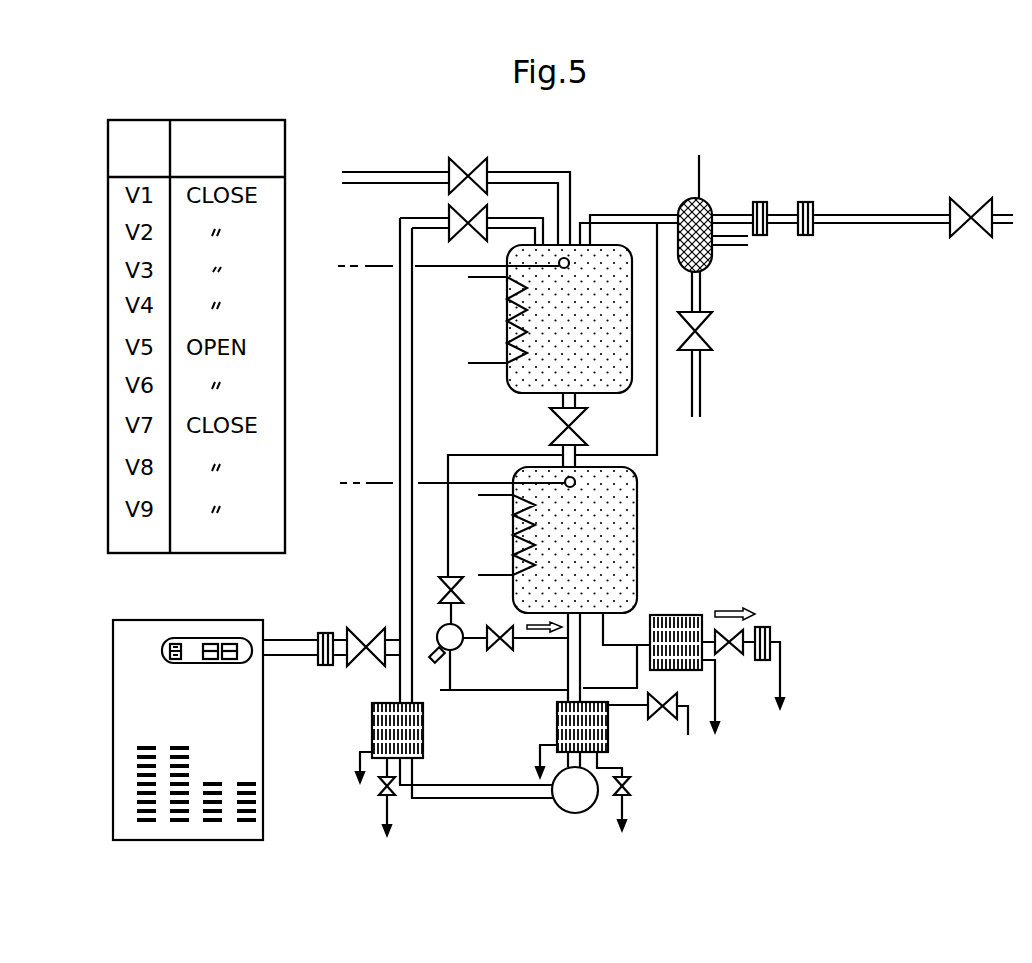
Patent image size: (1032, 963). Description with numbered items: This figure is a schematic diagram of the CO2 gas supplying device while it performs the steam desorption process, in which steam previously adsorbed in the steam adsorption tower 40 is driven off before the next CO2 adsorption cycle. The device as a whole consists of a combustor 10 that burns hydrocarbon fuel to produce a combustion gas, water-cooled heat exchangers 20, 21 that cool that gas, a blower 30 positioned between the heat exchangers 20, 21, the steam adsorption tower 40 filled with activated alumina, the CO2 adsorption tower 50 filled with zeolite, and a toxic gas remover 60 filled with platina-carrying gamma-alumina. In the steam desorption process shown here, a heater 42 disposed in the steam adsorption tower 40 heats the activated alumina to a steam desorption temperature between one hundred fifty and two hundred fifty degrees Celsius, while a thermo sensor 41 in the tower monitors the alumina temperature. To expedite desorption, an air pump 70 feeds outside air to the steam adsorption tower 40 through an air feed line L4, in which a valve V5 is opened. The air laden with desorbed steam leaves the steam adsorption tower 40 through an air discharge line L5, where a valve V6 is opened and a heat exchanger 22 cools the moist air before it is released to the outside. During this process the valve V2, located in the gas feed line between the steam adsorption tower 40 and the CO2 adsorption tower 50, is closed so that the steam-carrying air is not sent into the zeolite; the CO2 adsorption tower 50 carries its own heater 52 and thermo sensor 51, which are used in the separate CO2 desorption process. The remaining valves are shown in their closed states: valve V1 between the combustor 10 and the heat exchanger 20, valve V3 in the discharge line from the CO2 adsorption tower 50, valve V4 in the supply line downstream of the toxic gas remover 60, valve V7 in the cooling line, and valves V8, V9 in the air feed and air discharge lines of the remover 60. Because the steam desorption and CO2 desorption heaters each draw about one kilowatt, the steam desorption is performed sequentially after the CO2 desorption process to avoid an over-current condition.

The combustor 10 is at (229, 622).
The heat exchanger 20 is at (372, 727).
The heat exchanger 21 is at (610, 735).
The heat exchanger 22 is at (697, 615).
The blower 30 is at (570, 798).
The steam adsorption tower 40 is at (620, 532).
The thermo sensor 41 is at (368, 484).
The heater 42 is at (493, 573).
The CO2 adsorption tower 50 is at (550, 320).
The thermo sensor 51 is at (367, 267).
The heater 52 is at (483, 365).
The toxic gas remover 60 is at (685, 200).
The air pump 70 is at (448, 690).
The valve V1 is at (372, 632).
The valve V2 is at (580, 433).
The valve V3 is at (468, 158).
The valve V4 is at (990, 234).
The valve V5 is at (502, 652).
The valve V6 is at (745, 633).
The valve V7 is at (466, 242).
The valve V8 is at (440, 582).
The valve V9 is at (706, 335).
The air feed line L4 is at (533, 641).
The air discharge line L5 is at (622, 640).